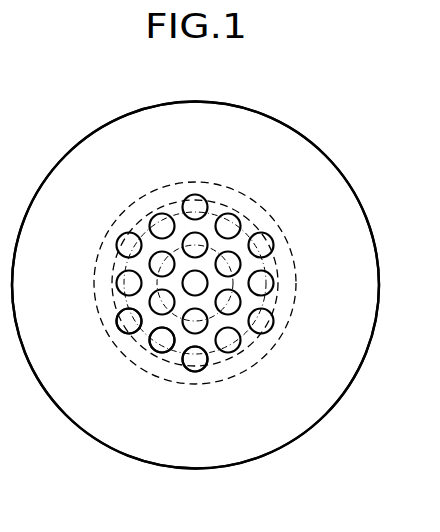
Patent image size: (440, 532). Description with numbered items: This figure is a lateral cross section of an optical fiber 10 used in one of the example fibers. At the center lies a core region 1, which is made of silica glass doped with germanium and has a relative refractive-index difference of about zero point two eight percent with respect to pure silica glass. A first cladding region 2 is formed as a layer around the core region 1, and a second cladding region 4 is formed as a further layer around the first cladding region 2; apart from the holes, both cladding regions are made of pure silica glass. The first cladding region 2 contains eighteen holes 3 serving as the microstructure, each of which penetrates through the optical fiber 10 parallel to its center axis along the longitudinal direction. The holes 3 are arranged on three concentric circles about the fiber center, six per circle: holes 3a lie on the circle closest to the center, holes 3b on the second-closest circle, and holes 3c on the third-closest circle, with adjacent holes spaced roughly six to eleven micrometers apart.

The optical fiber 10 is at (255, 107).
The core region 1 is at (200, 281).
The first cladding region 2 is at (296, 290).
The holes 3 is at (114, 268).
The holes on the closest concentric circle 3a is at (160, 303).
The holes on the second-closest concentric circle 3b is at (157, 349).
The holes on the third-closest concentric circle 3c is at (195, 359).
The second cladding region 4 is at (353, 381).